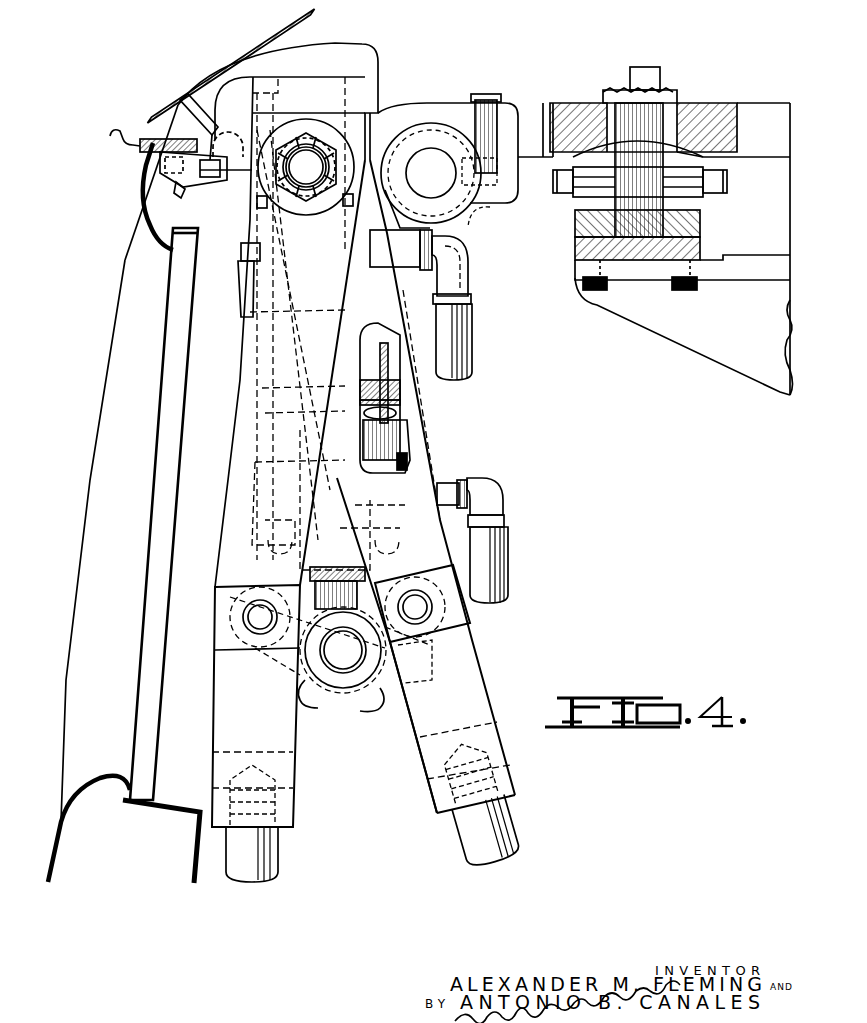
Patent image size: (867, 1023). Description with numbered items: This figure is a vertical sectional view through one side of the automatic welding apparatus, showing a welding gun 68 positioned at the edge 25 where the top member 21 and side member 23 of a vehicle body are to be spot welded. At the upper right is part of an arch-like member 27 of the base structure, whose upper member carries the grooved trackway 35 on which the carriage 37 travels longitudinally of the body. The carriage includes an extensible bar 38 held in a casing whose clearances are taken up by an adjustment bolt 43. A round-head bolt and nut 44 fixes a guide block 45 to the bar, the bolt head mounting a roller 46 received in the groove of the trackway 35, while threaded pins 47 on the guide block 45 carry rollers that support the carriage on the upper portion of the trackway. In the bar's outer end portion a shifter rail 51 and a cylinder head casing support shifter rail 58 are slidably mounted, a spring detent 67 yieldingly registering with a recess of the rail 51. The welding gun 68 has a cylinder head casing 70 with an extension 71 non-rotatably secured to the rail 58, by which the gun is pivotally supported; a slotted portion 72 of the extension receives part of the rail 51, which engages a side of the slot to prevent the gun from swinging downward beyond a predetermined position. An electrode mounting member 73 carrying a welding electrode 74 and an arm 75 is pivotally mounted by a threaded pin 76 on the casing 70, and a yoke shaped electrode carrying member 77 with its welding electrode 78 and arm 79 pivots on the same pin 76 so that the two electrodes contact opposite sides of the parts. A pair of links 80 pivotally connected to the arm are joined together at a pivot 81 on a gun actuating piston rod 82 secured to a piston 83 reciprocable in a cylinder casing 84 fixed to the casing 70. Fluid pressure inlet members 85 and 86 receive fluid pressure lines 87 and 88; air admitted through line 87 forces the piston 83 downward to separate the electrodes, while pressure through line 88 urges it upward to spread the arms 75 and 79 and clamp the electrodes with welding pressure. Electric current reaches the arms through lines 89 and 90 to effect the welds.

The top member 21 is at (110, 133).
The side member 23 is at (148, 196).
The edge 25 is at (150, 150).
The arch-like member 27 is at (693, 350).
The grooved trackway 35 is at (612, 282).
The carriage 37 is at (720, 108).
The extensible bar 38 is at (548, 105).
The adjustment bolt 43 is at (560, 168).
The round-head bolt and nut 44 is at (633, 72).
The guide block 45 is at (715, 195).
The roller 46 is at (700, 225).
The threaded pin 47 is at (553, 185).
The shifter rail 51 is at (490, 190).
The cylinder head casing support shifter rail 58 is at (431, 165).
The spring detent 67 is at (489, 97).
The welding gun 68 is at (176, 190).
The cylinder head casing 70 is at (238, 272).
The extension 71 is at (382, 153).
The slotted portion 72 is at (470, 227).
The electrode mounting member 73 is at (352, 57).
The welding electrode 74 is at (192, 124).
The arm 75 is at (462, 657).
The threaded pin 76 is at (305, 180).
The yoke shaped electrode carrying member 77 is at (235, 178).
The welding electrode 78 is at (165, 172).
The arm 79 is at (272, 738).
The link 80 is at (337, 649).
The pivotal connection 81 is at (335, 648).
The gun actuating piston rod 82 is at (355, 585).
The piston 83 is at (405, 395).
The cylinder casing 84 is at (405, 428).
The fluid pressure inlet member 85 is at (395, 252).
The fluid pressure inlet member 86 is at (447, 483).
The fluid pressure line 87 is at (470, 335).
The fluid pressure line 88 is at (507, 578).
The electric current line 89 is at (505, 820).
The electric current line 90 is at (270, 856).